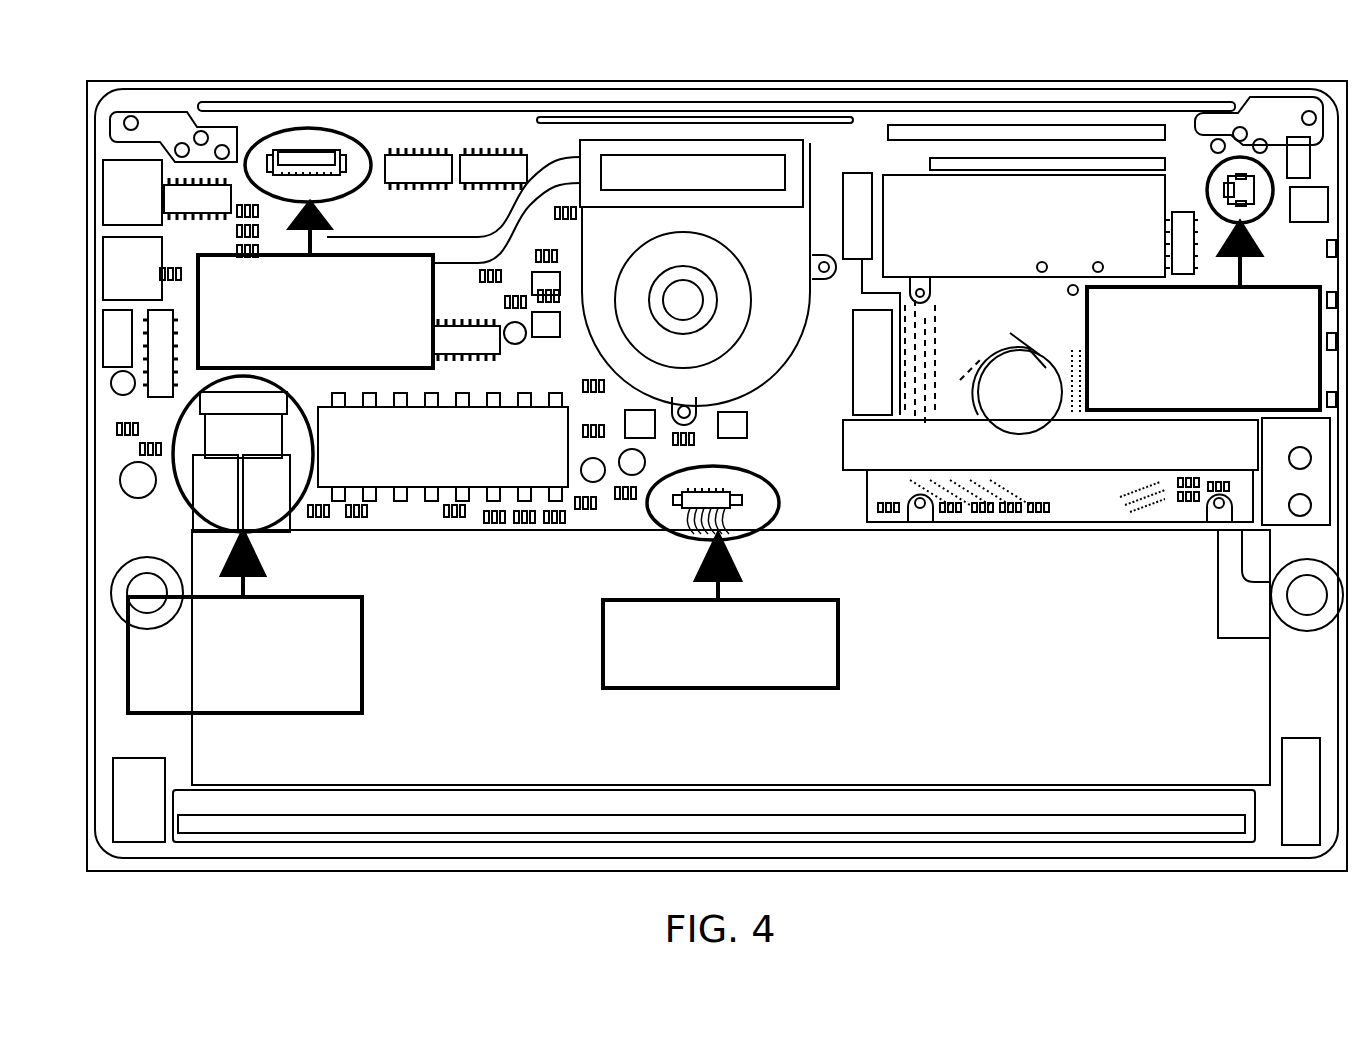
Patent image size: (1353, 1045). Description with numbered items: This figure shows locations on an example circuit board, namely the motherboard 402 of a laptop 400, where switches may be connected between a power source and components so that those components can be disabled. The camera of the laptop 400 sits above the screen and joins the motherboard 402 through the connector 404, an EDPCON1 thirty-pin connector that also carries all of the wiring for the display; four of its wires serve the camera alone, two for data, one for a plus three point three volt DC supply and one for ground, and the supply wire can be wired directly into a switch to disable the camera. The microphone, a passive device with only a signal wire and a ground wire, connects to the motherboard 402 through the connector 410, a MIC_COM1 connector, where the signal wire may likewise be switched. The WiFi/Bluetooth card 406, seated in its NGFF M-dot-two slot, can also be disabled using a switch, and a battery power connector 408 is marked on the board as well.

The laptop 400 is at (530, 81).
The motherboard 402 is at (904, 160).
The connector 404 is at (313, 125).
The WiFi/Bluetooth card 406 is at (313, 458).
The battery power connector 408 is at (758, 480).
The connector 410 is at (1086, 344).